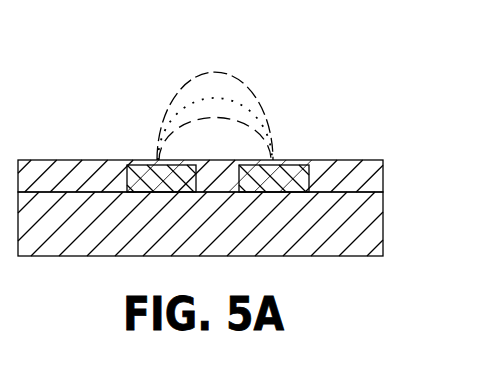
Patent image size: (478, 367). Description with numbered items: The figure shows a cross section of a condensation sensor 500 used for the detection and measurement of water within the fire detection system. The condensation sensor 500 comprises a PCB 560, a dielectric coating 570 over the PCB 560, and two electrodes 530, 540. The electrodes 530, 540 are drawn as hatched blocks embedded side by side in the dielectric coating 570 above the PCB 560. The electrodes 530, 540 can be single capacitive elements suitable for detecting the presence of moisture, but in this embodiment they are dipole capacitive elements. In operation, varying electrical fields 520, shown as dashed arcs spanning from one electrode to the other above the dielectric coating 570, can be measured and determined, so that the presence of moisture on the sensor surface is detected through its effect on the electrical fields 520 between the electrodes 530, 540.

The condensation sensor 500 is at (96, 36).
The electrical fields 520 is at (196, 125).
The electrode 530 is at (127, 183).
The electrode 540 is at (310, 183).
The PCB 560 is at (384, 222).
The dielectric coating 570 is at (384, 176).